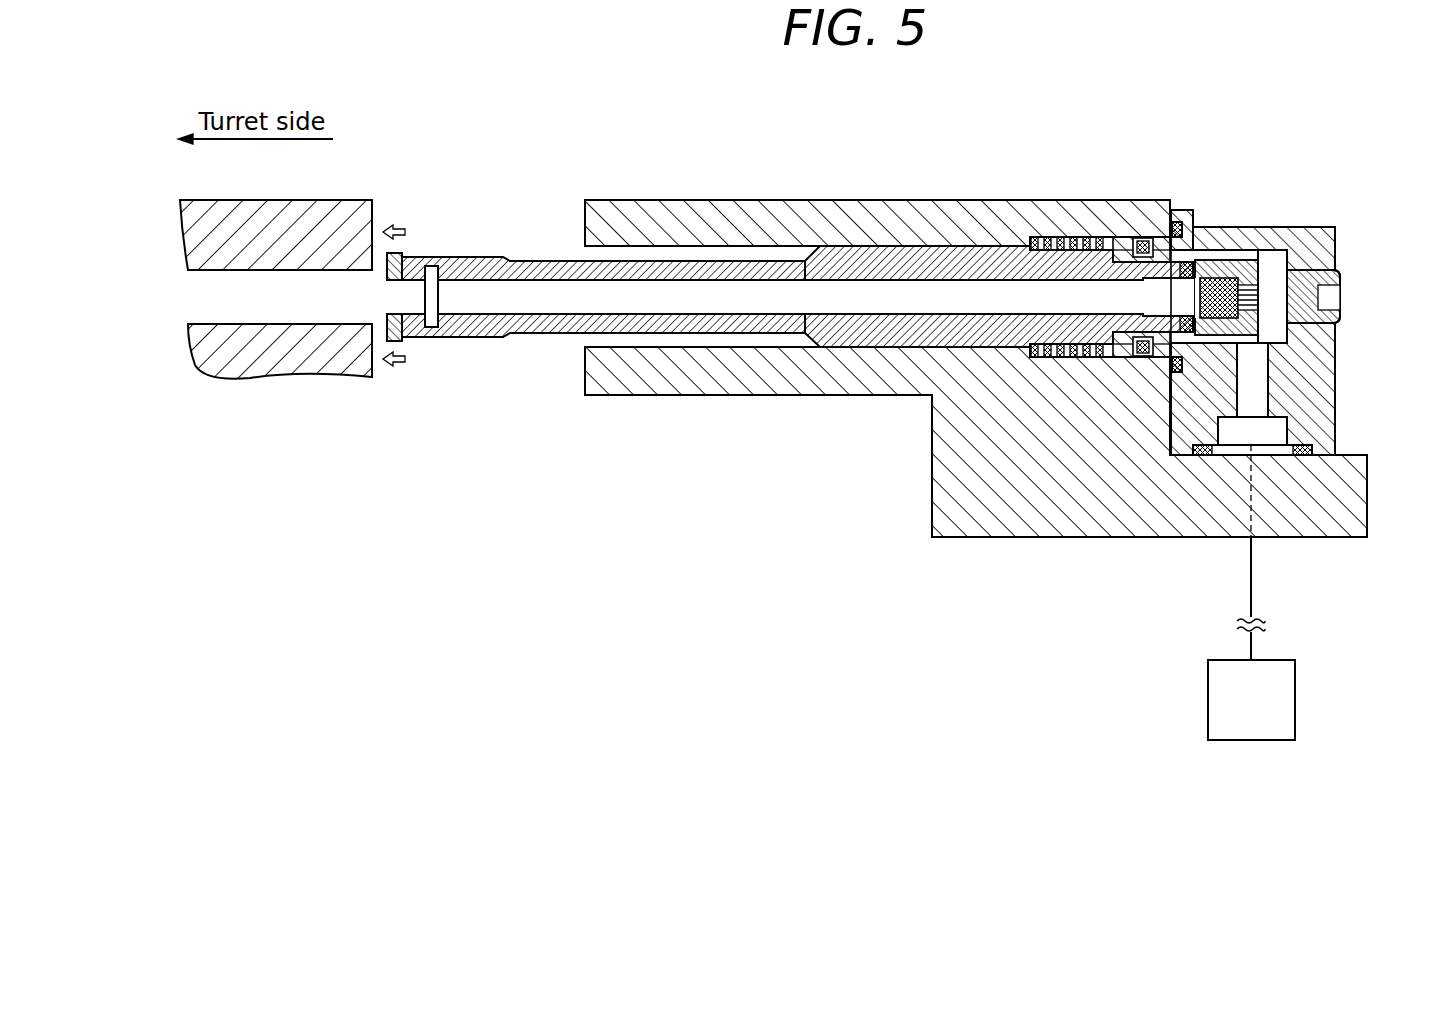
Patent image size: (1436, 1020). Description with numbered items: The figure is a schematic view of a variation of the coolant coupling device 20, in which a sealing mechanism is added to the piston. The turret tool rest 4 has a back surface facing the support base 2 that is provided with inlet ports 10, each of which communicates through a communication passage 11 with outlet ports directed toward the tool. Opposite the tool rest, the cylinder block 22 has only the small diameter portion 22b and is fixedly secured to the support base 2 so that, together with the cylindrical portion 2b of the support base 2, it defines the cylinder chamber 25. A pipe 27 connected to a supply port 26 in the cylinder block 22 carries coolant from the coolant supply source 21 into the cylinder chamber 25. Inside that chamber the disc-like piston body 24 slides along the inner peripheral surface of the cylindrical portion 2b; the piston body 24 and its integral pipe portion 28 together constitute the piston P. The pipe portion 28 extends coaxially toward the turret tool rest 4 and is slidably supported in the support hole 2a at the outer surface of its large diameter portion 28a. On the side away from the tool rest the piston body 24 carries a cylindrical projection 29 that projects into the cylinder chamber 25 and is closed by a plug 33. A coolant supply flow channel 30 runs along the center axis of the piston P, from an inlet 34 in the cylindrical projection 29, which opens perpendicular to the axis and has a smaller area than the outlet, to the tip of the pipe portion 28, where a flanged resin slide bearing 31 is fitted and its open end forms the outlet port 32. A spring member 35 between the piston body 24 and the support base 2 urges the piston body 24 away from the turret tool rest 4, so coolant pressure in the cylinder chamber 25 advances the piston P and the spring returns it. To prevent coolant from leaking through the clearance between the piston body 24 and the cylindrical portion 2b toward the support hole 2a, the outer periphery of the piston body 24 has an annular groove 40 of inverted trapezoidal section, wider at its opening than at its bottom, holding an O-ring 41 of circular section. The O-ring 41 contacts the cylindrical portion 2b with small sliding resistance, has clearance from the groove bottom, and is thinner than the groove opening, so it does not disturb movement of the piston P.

The support base 2 is at (985, 518).
The support hole 2a is at (740, 244).
The cylindrical portion 2b is at (1090, 256).
The piston P is at (990, 246).
The turret tool rest 4 is at (330, 212).
The inlet ports 10 is at (355, 310).
The communication passage 11 is at (253, 308).
The coolant coupling device 20 is at (1265, 153).
The coolant supply source 21 is at (1282, 698).
The cylinder block 22 is at (1228, 230).
The small diameter portion 22b is at (1262, 233).
The piston body 24 is at (1135, 255).
The cylinder chamber 25 is at (1283, 263).
The supply port 26 is at (1290, 433).
The pipe 27 is at (1252, 600).
The pipe portion 28 is at (740, 332).
The large diameter portion 28a is at (857, 347).
The cylindrical projection 29 is at (1195, 405).
The coolant supply flow channel 30 is at (975, 300).
The slide bearing 31 is at (398, 258).
The outlet port 32 is at (385, 297).
The plug 33 is at (1255, 323).
The inlet 34 is at (1186, 262).
The spring member 35 is at (1060, 352).
The annular groove 40 is at (1145, 232).
The O-ring 41 is at (1177, 223).